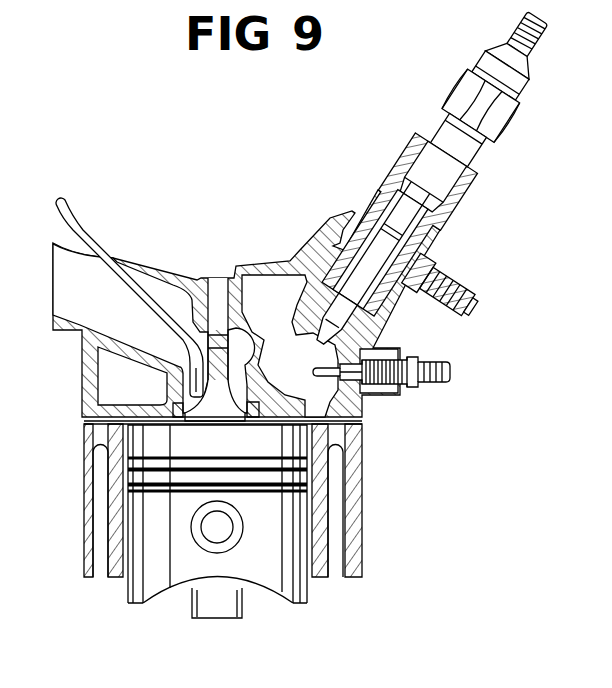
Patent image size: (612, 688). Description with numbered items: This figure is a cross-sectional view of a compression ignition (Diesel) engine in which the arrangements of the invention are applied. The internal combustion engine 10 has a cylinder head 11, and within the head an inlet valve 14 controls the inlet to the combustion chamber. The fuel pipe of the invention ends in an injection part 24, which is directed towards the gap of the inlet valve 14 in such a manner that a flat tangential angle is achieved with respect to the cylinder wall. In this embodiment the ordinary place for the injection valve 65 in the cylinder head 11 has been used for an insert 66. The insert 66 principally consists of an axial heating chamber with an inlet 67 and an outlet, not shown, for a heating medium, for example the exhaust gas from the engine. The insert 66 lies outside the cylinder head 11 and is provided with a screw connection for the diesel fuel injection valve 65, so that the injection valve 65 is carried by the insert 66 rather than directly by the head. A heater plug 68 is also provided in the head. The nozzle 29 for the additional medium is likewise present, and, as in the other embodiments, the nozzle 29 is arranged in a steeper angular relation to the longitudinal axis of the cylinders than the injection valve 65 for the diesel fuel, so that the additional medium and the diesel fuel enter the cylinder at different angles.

The internal combustion engine 10 is at (80, 530).
The cylinder head 11 is at (80, 379).
The inlet valve 14 is at (205, 446).
The injection part 24 is at (262, 444).
The nozzle for the additional medium 29 is at (140, 292).
The injection valve 65 is at (497, 118).
The insert 66 is at (455, 212).
The inlet 67 is at (490, 320).
The heater plug 68 is at (427, 378).